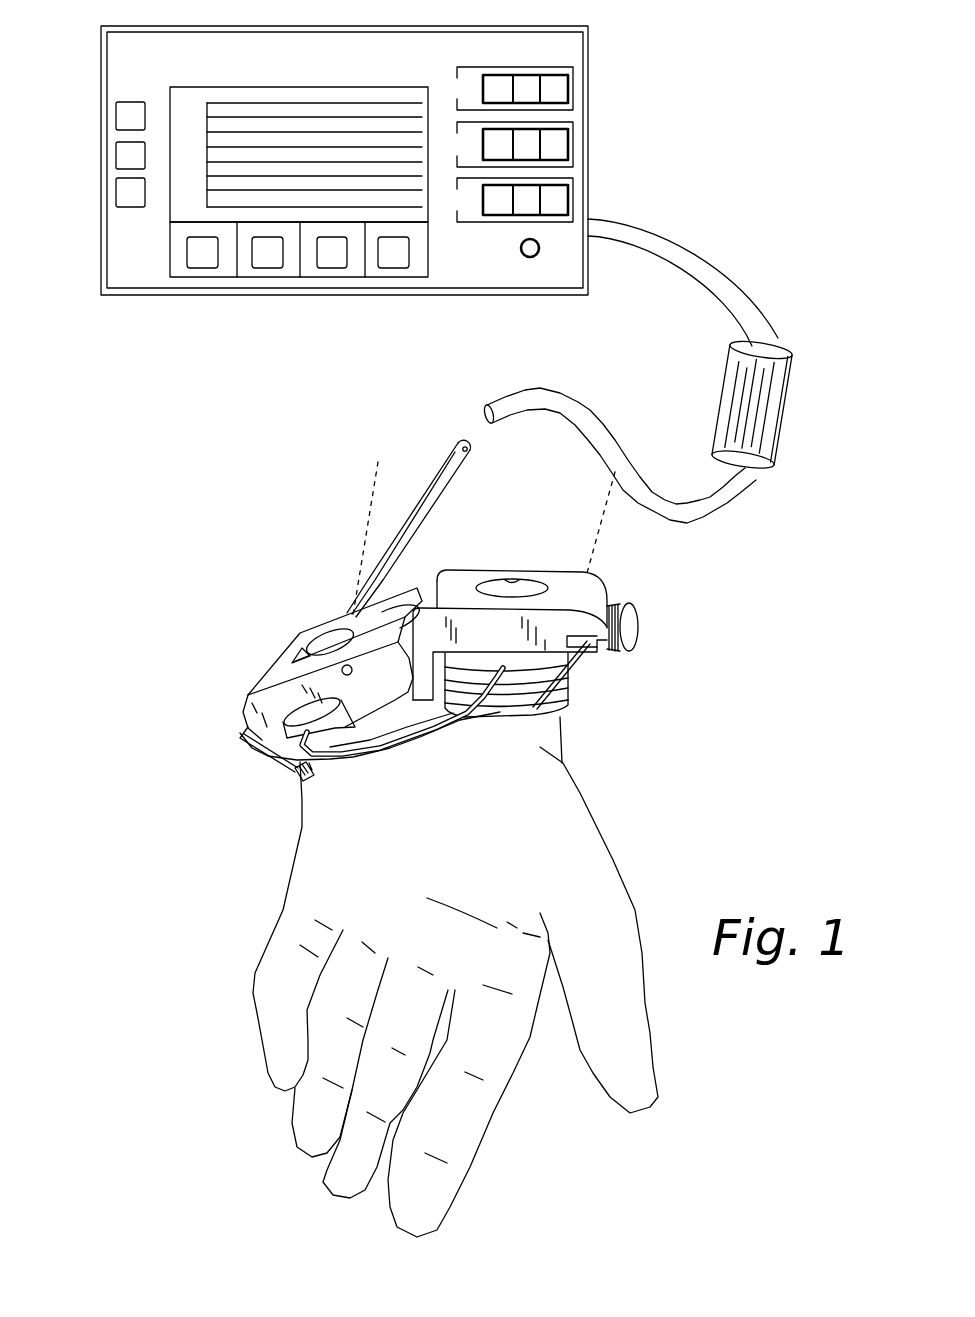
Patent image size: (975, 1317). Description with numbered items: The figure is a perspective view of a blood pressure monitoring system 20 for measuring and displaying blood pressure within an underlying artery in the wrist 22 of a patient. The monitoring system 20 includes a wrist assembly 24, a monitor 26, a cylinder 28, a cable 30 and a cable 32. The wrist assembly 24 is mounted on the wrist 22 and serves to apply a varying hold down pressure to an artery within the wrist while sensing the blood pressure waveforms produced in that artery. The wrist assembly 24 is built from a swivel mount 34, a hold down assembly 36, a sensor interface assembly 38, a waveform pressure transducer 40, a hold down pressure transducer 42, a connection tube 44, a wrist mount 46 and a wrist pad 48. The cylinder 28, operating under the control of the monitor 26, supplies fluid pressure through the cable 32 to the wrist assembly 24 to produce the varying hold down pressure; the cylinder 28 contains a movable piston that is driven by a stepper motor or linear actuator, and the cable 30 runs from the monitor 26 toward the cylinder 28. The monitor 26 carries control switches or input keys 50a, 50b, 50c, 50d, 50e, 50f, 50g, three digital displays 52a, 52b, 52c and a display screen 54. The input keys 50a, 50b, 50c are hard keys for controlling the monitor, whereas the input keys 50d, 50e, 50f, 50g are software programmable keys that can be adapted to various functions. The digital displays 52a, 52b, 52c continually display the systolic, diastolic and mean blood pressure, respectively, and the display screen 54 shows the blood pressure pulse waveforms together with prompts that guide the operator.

The blood pressure monitoring system 20 is at (439, 267).
The wrist 22 is at (565, 738).
The wrist assembly 24 is at (452, 627).
The monitor 26 is at (591, 31).
The cylinder 28 is at (790, 431).
The cable 30 is at (762, 297).
The cable 32 is at (590, 400).
The swivel mount 34 is at (246, 695).
The hold down assembly 36 is at (610, 578).
The sensor interface assembly 38 is at (492, 720).
The waveform pressure transducer 40 is at (350, 712).
The hold down pressure transducer 42 is at (333, 640).
The connection tube 44 is at (365, 762).
The wrist mount 46 is at (296, 780).
The wrist pad 48 is at (395, 733).
The input key 50a is at (115, 108).
The input key 50b is at (115, 155).
The input key 50c is at (115, 192).
The input key 50d is at (199, 263).
The input key 50e is at (268, 263).
The input key 50f is at (331, 263).
The input key 50g is at (391, 263).
The digital display 52a is at (573, 92).
The digital display 52b is at (573, 135).
The digital display 52c is at (573, 187).
The display screen 54 is at (330, 86).